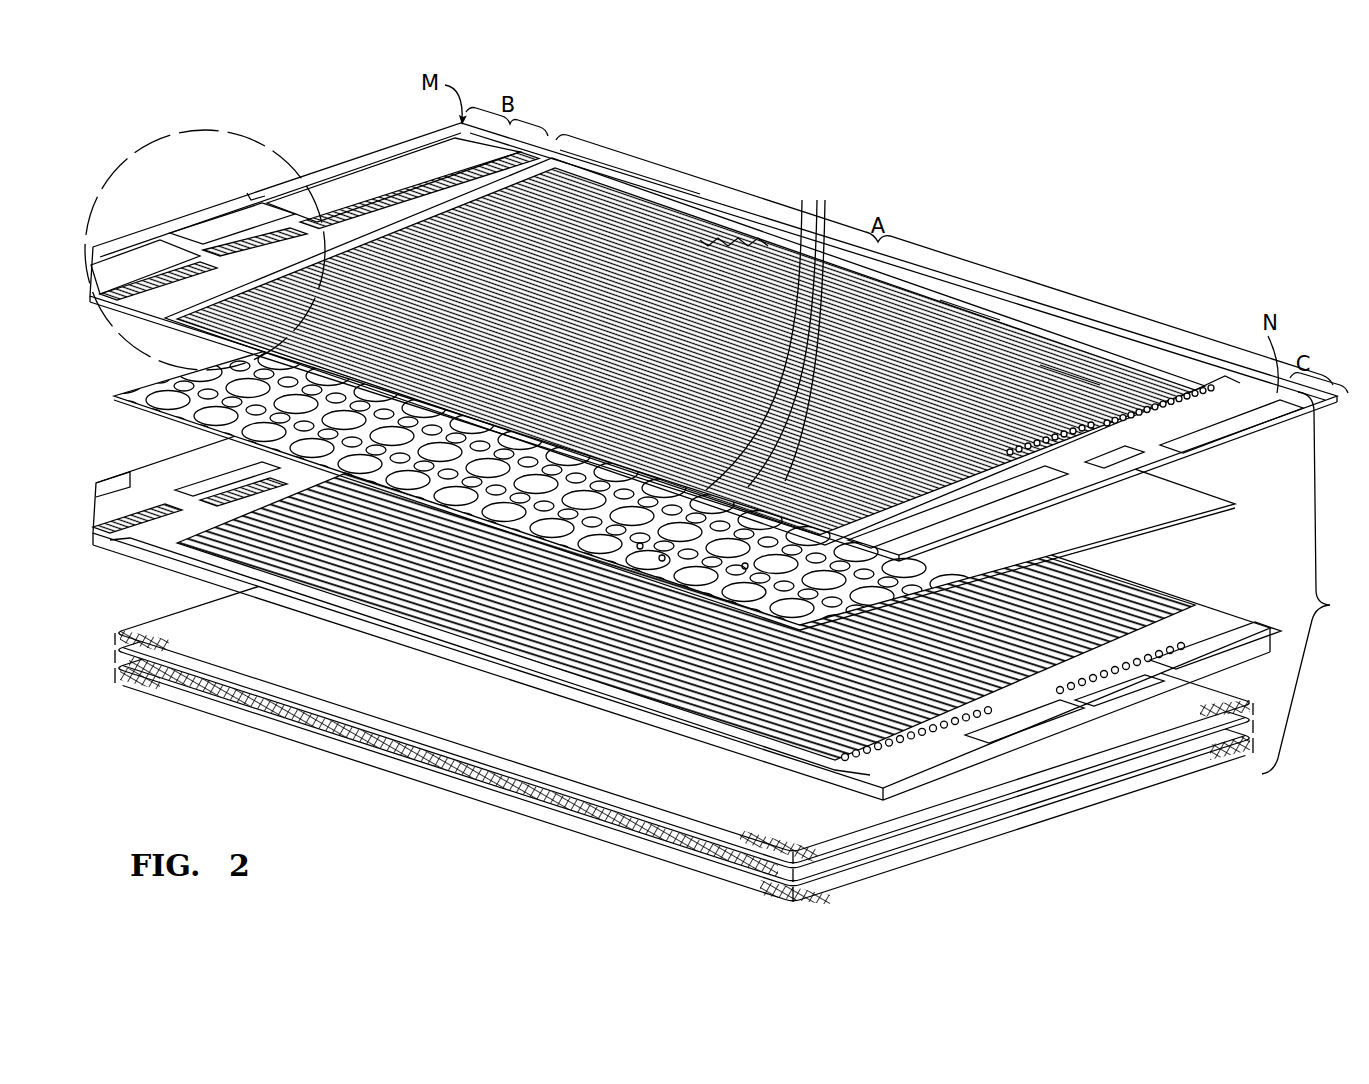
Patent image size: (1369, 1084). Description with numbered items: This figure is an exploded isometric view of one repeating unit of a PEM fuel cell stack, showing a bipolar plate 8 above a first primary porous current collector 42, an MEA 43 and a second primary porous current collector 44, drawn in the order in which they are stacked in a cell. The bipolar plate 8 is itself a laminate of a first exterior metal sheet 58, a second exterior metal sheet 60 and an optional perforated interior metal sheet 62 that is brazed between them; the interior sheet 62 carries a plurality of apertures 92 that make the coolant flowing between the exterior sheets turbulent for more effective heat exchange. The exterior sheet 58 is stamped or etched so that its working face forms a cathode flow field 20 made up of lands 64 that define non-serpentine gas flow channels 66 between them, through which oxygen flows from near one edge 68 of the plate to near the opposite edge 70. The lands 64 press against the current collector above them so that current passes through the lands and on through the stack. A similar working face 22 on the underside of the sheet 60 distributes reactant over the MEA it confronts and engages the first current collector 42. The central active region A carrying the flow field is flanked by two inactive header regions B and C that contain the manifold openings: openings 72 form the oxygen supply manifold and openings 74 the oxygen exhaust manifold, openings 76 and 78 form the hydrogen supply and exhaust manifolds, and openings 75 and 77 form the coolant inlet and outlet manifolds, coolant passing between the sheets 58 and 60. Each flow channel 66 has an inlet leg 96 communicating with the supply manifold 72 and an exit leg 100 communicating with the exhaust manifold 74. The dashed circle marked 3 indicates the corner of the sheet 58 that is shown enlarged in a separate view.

The first separator plate 3 is at (146, 146).
The bipolar plate 8 is at (97, 477).
The cathode flow field 20 is at (752, 245).
The working face 22 is at (140, 568).
The first primary porous current collector 42 is at (838, 826).
The MEA 43 is at (960, 845).
The second primary porous current collector 44 is at (1020, 830).
The first exterior metal sheet 58 is at (1228, 370).
The second exterior metal sheet 60 is at (1305, 583).
The perforated interior metal sheet 62 is at (1205, 505).
The lands 64 is at (1070, 373).
The gas flow channels 66 is at (970, 312).
The edge 68 is at (303, 168).
The opposite edge 70 is at (1232, 455).
The openings 72 is at (365, 178).
The openings 74 is at (1057, 490).
The openings 75 is at (1133, 442).
The openings 76 is at (1227, 413).
The openings 77 is at (213, 235).
The openings 78 is at (138, 265).
The apertures 92 is at (745, 568).
The inlet legs 96 is at (628, 188).
The exit legs 100 is at (767, 326).